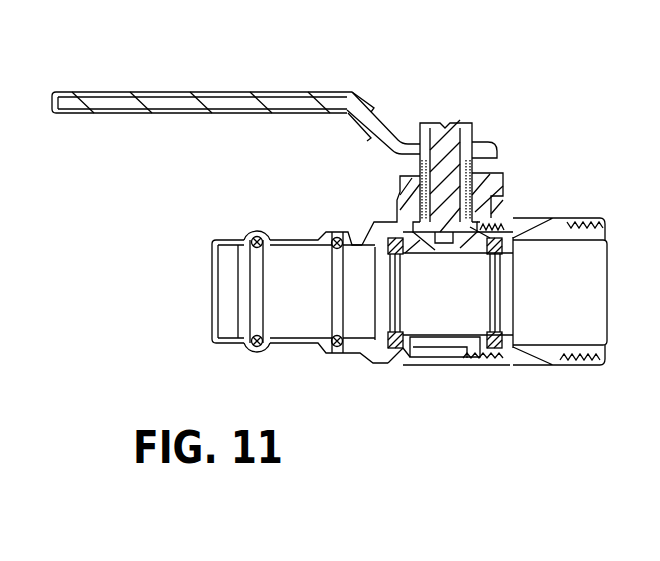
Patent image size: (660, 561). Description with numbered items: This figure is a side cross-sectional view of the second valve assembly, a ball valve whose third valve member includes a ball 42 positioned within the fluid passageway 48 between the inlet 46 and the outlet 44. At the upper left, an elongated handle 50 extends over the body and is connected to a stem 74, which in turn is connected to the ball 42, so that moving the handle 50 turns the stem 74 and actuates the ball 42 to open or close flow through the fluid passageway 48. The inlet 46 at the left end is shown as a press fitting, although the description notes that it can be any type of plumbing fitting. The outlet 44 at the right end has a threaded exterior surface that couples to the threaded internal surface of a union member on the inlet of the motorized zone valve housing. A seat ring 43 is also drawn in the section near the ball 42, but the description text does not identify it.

The handle 50 is at (143, 90).
The stem 74 is at (455, 178).
The ball 42 is at (518, 232).
The fluid passageway 48 is at (560, 270).
The inlet 46 is at (227, 343).
The seat ring 43 is at (392, 348).
The outlet 44 is at (580, 355).